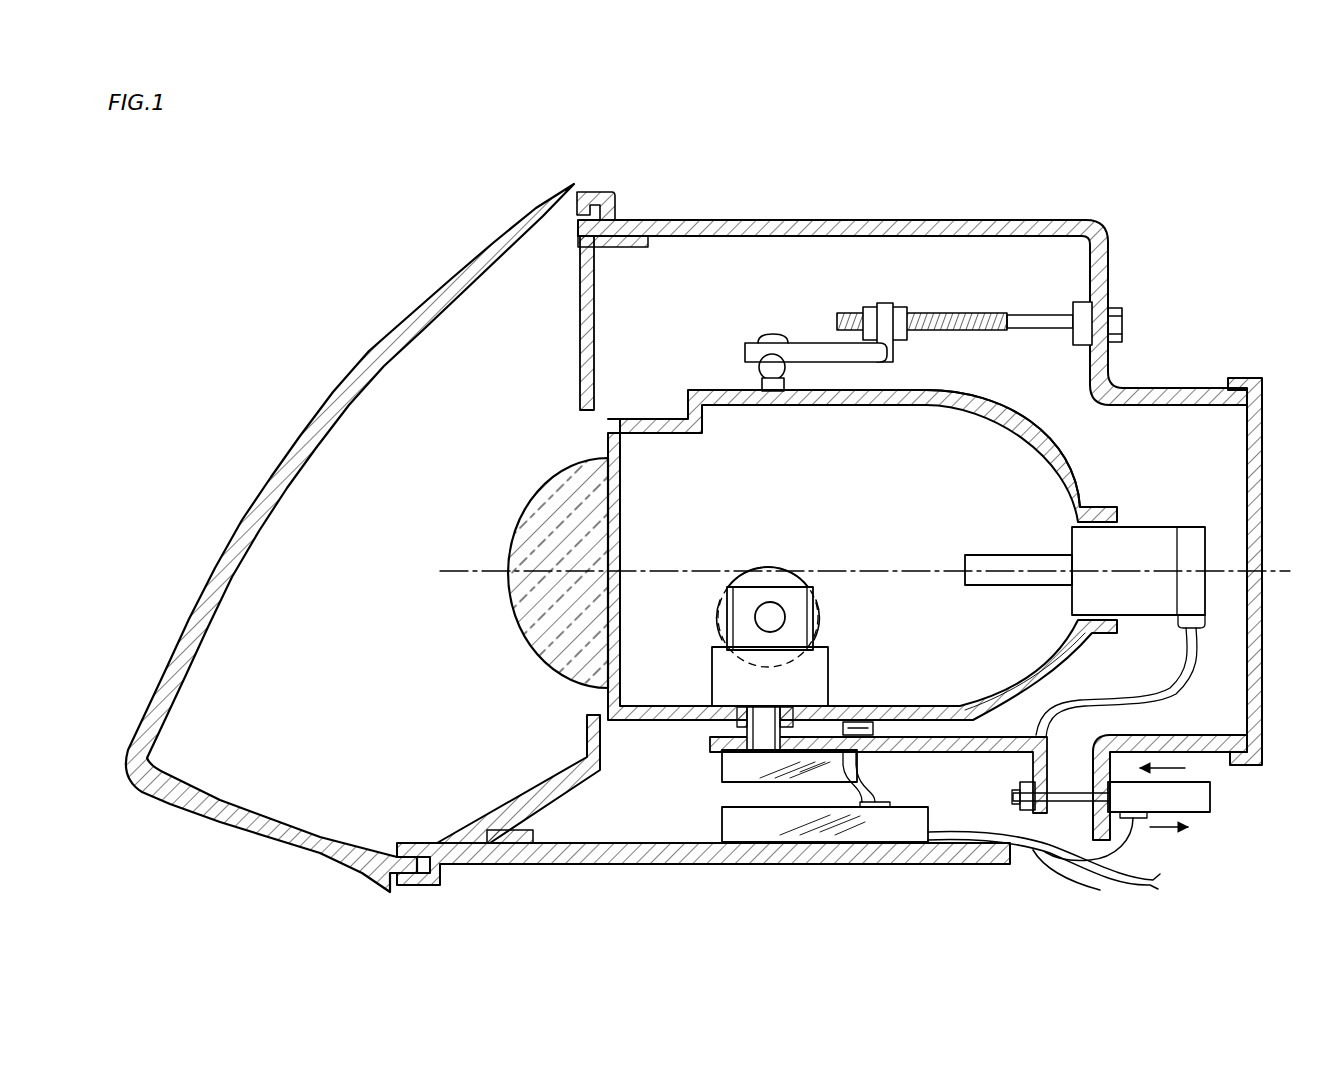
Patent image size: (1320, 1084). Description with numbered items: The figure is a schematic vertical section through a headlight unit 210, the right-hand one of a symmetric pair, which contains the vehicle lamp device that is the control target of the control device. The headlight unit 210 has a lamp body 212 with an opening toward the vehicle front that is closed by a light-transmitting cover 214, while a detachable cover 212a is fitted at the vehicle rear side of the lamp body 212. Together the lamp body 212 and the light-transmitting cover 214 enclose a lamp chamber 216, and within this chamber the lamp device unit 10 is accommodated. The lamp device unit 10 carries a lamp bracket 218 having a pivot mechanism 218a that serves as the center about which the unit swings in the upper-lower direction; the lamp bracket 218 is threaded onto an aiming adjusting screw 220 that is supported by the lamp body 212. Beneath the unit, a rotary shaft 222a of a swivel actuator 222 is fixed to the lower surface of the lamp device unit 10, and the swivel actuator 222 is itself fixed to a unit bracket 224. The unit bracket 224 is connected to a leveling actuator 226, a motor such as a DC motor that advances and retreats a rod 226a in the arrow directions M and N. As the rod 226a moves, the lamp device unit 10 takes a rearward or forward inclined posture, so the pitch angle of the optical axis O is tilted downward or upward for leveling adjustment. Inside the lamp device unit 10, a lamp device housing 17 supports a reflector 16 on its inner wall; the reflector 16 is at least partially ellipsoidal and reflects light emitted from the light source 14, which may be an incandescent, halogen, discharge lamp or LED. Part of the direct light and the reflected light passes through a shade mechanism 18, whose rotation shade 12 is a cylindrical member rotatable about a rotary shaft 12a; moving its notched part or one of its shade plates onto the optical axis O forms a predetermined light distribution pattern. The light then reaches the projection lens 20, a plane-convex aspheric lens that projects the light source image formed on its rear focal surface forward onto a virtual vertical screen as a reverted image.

The headlight unit 210 is at (988, 214).
The lamp body 212 is at (790, 221).
The detachable cover 212a is at (1242, 378).
The light-transmitting cover 214 is at (407, 325).
The lamp chamber 216 is at (528, 368).
The lamp bracket 218 is at (822, 356).
The pivot mechanism 218a is at (764, 368).
The aiming adjusting screw 220 is at (1030, 328).
The swivel actuator 222 is at (736, 768).
The rotary shaft 222a is at (755, 733).
The unit bracket 224 is at (916, 745).
The leveling actuator 226 is at (1212, 797).
The rod 226a is at (1072, 797).
The lamp device unit 10 is at (660, 414).
The rotation shade 12 is at (792, 578).
The rotary shaft 12a is at (773, 617).
The light source 14 is at (1010, 563).
The reflector 16 is at (920, 406).
The lamp device housing 17 is at (1012, 425).
The shade mechanism 18 is at (767, 558).
The projection lens 20 is at (535, 492).
The optical axis O is at (450, 575).